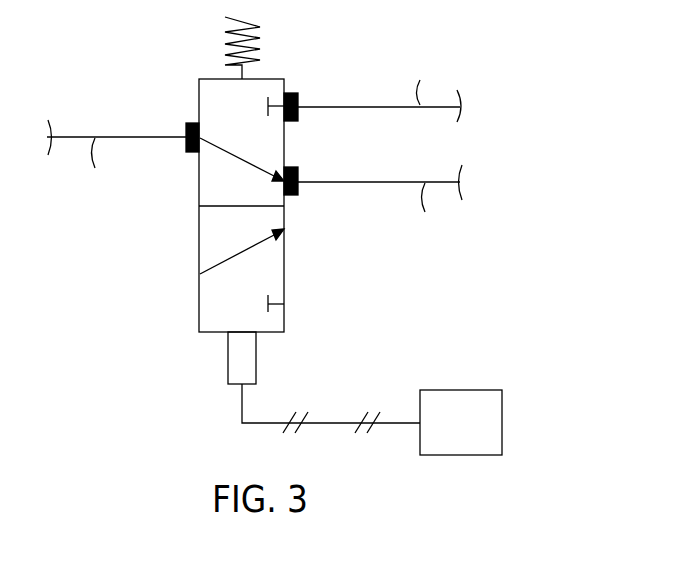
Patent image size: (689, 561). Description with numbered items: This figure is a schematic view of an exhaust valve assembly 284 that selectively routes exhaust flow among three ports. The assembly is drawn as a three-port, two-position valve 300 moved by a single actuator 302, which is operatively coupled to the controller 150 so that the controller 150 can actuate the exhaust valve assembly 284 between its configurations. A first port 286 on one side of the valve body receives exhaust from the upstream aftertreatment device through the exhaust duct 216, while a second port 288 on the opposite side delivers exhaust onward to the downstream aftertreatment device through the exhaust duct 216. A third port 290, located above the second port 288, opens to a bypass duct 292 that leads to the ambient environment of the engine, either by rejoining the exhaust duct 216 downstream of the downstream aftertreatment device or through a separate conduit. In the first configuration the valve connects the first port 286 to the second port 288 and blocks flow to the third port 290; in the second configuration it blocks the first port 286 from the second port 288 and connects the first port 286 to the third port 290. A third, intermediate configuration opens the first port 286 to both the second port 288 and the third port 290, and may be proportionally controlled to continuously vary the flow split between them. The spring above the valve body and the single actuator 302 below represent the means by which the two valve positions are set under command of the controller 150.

The exhaust valve assembly 284 is at (491, 50).
The first port 286 is at (186, 125).
The second port 288 is at (298, 160).
The third port 290 is at (297, 93).
The bypass duct 292 is at (379, 84).
The exhaust duct 216 is at (254, 181).
The three-port, two-position valve 300 is at (293, 284).
The single actuator 302 is at (256, 357).
The controller 150 is at (476, 434).